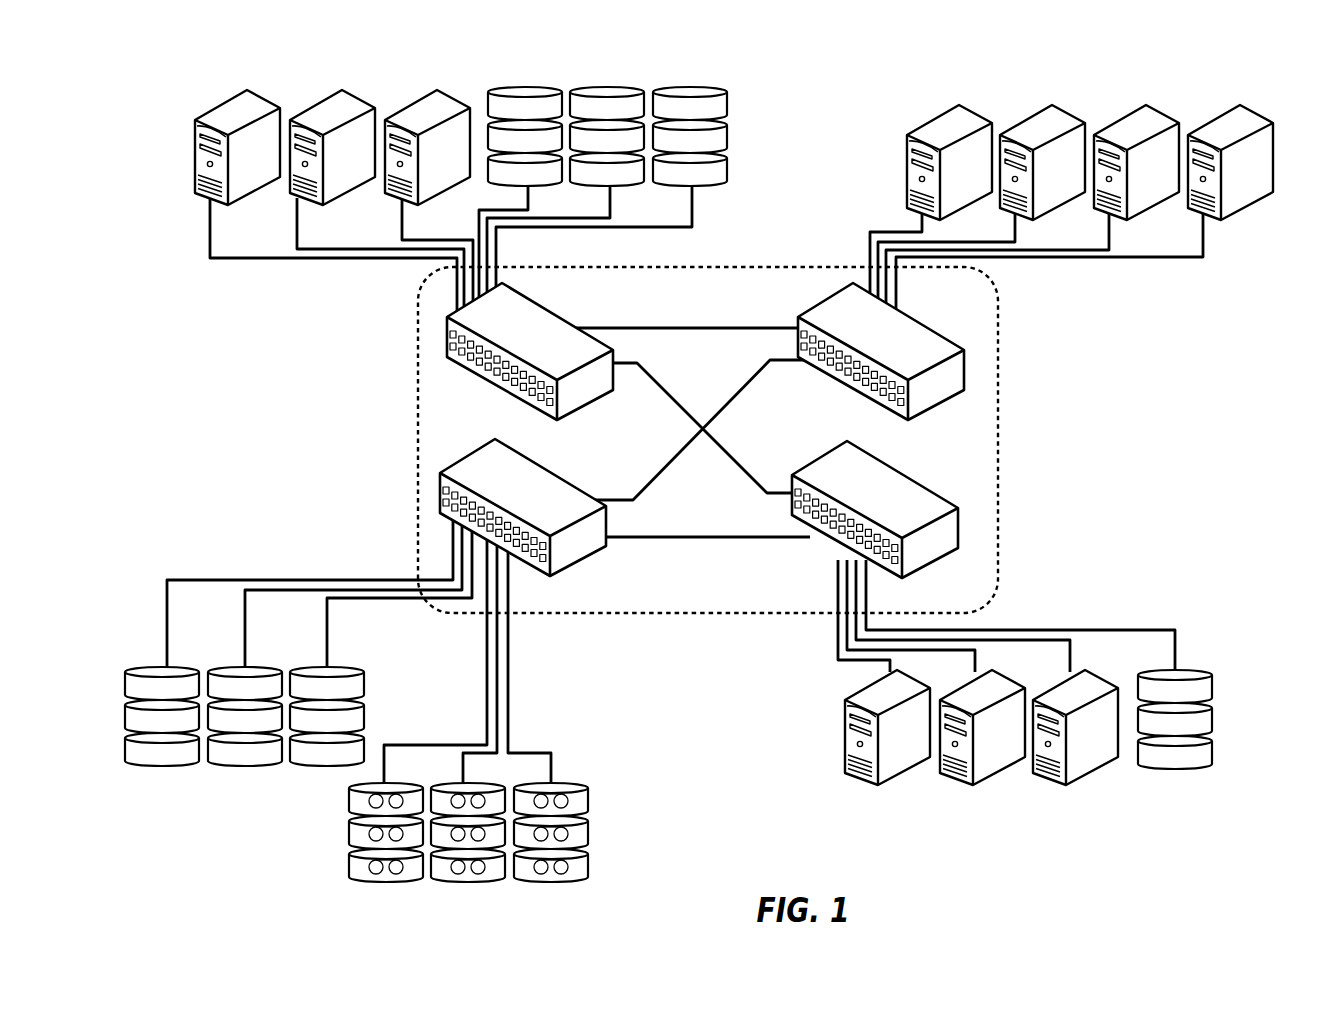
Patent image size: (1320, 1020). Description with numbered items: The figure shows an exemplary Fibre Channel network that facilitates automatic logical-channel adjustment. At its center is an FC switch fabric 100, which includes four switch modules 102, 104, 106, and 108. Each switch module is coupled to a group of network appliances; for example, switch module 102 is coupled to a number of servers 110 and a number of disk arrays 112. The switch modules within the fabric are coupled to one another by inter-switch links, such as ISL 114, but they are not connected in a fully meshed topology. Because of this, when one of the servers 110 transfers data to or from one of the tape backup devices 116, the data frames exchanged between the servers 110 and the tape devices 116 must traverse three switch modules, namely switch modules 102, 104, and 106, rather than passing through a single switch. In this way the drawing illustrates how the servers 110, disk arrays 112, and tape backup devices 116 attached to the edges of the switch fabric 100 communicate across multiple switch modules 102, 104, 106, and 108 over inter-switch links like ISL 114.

The FC switch fabric 100 is at (708, 440).
The switch module 102 is at (530, 351).
The switch module 104 is at (881, 351).
The switch module 106 is at (523, 507).
The switch module 108 is at (875, 509).
The servers 110 is at (205, 83).
The disk arrays 112 is at (738, 83).
The inter-switch link 114 is at (665, 328).
The tape backup devices 116 is at (338, 886).